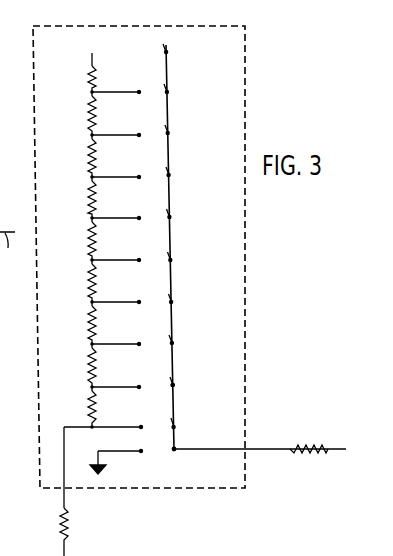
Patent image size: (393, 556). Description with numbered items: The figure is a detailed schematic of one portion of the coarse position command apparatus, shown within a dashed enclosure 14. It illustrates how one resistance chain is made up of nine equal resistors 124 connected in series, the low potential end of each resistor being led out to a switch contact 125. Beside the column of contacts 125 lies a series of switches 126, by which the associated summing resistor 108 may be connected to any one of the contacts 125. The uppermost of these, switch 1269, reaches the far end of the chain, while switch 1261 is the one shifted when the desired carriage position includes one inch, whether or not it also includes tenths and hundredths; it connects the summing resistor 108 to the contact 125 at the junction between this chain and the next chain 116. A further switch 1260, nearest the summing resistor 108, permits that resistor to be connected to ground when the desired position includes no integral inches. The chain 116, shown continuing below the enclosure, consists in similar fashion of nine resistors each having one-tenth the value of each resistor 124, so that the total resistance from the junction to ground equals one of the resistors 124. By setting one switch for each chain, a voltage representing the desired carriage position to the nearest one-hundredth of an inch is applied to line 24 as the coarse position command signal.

The enclosure / dashed boundary 14 is at (34, 61).
The line 24 is at (12, 249).
The resistors 124 is at (94, 104).
The switch contact 125 is at (139, 90).
The switches 126 is at (254, 247).
The switch 1269 is at (168, 72).
The switch 1261 is at (175, 404).
The switch 1260 is at (176, 440).
The summing resistor 108 is at (306, 448).
The chain 116 is at (69, 523).